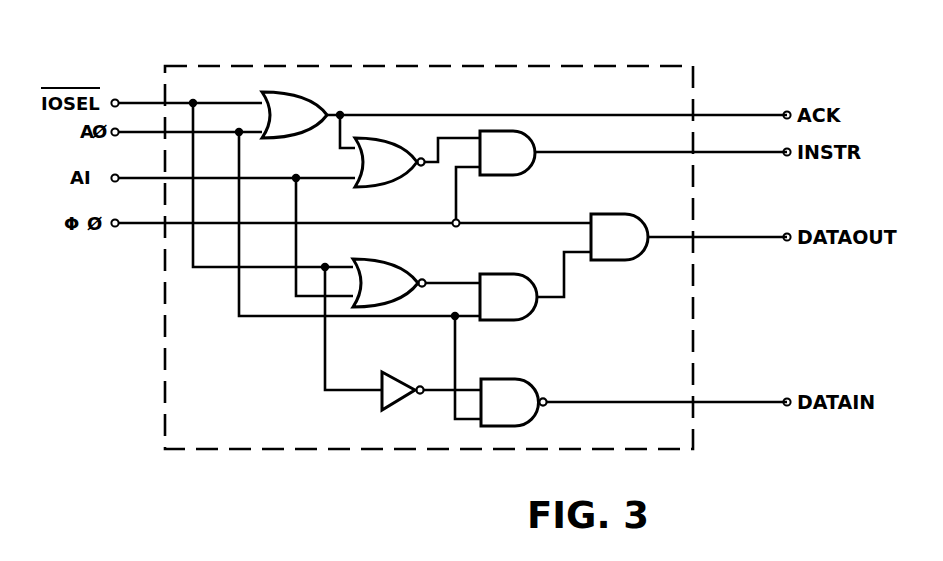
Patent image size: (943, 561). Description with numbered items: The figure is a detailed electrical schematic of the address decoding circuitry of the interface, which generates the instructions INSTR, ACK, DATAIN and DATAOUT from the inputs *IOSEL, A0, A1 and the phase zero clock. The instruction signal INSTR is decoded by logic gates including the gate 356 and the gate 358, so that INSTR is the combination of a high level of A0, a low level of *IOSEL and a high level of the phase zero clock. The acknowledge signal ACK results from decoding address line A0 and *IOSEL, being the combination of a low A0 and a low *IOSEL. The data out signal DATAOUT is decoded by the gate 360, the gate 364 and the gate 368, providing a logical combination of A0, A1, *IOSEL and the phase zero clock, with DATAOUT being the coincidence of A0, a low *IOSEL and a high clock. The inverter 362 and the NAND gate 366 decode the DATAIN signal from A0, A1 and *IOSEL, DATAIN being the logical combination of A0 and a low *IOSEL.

The logic gate 364 is at (305, 103).
The logic gate 356 is at (378, 183).
The logic gate 358 is at (521, 168).
The logic gate 360 is at (406, 267).
The inverter 362 is at (397, 398).
The NAND gate 366 is at (526, 412).
The logic gate 368 is at (623, 258).